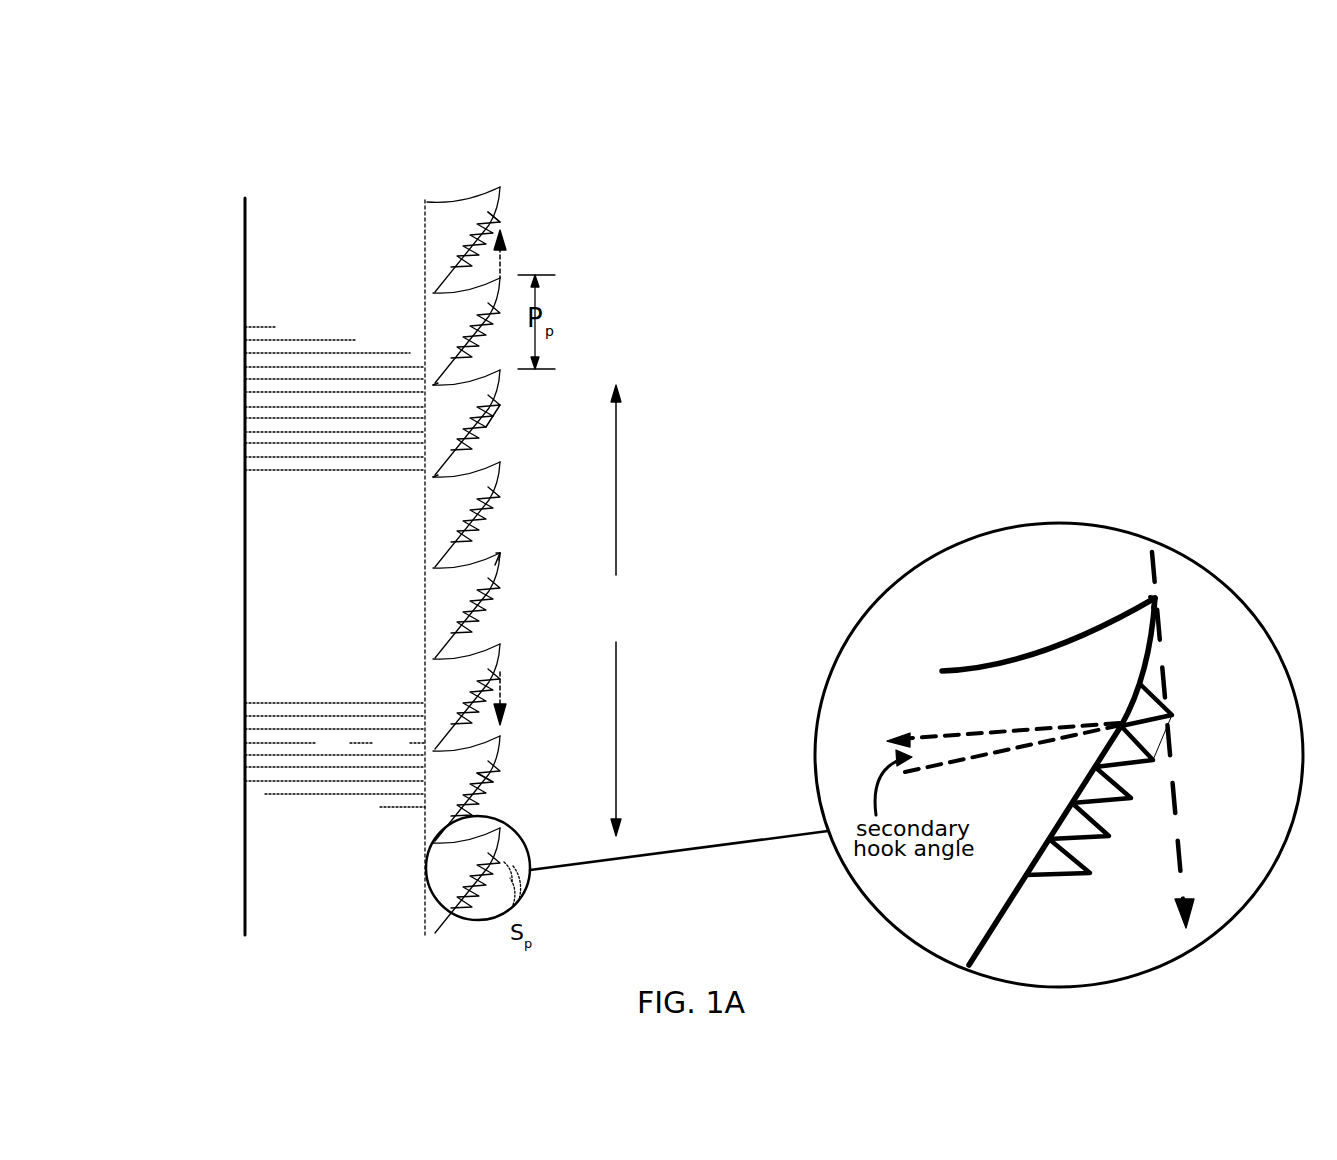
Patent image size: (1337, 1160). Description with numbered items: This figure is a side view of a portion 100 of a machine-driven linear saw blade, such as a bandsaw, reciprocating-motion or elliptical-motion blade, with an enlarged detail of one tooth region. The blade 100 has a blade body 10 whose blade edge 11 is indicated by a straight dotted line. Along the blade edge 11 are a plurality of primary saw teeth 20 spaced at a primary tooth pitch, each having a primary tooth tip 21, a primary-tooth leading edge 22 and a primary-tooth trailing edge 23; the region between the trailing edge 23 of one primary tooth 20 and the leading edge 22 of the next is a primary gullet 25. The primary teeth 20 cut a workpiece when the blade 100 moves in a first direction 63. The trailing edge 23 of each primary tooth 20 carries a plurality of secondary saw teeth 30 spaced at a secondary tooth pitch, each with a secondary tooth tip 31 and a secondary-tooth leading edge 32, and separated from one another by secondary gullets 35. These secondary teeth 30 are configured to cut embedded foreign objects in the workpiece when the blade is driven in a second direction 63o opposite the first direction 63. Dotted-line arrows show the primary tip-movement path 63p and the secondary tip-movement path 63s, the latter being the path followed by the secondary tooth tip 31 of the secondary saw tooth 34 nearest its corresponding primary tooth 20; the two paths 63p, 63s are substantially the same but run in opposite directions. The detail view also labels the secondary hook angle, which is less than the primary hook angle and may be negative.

The blade body 10 is at (263, 560).
The blade edge 11 is at (425, 212).
The primary saw tooth 20 is at (450, 318).
The primary tooth tip 21 is at (483, 553).
The primary-tooth leading edge 22 is at (497, 553).
The primary-tooth trailing edge 23 is at (497, 565).
The primary gullet 25 is at (438, 468).
The secondary saw tooth 30 is at (498, 673).
The secondary tooth tip 31 is at (495, 402).
The secondary-tooth leading edge 32 is at (497, 407).
The secondary saw tooth nearest its primary saw tooth 34 is at (498, 218).
The secondary gullet 35 is at (497, 775).
The first direction 63 is at (636, 480).
The second direction 63o is at (643, 739).
The primary tip-movement path 63p is at (503, 256).
The secondary tip-movement path 63s is at (500, 703).
The linear saw blade portion 100 is at (817, 548).